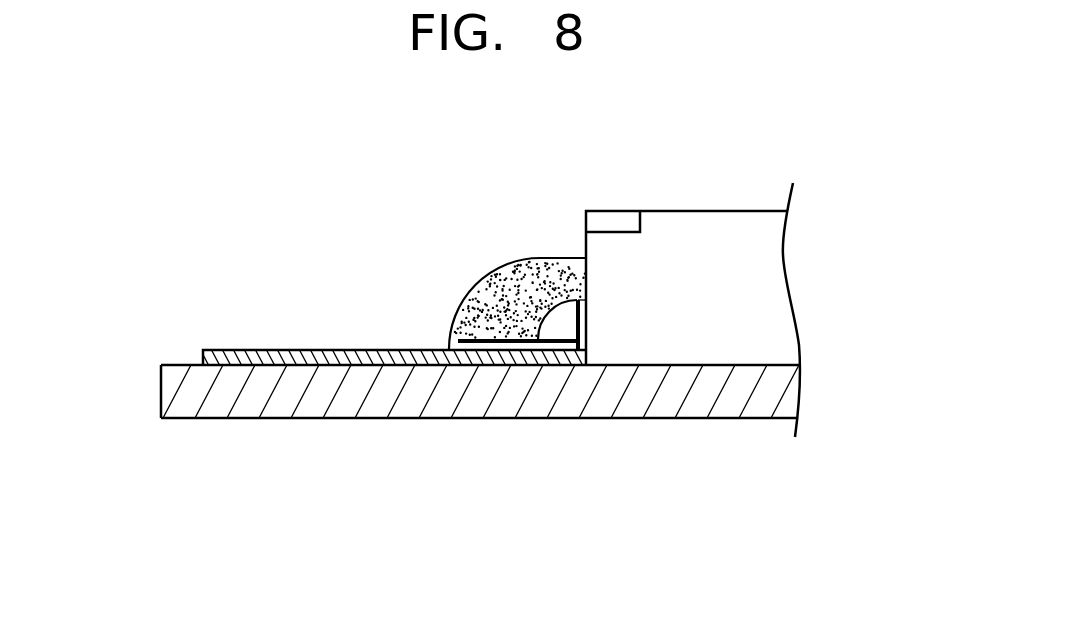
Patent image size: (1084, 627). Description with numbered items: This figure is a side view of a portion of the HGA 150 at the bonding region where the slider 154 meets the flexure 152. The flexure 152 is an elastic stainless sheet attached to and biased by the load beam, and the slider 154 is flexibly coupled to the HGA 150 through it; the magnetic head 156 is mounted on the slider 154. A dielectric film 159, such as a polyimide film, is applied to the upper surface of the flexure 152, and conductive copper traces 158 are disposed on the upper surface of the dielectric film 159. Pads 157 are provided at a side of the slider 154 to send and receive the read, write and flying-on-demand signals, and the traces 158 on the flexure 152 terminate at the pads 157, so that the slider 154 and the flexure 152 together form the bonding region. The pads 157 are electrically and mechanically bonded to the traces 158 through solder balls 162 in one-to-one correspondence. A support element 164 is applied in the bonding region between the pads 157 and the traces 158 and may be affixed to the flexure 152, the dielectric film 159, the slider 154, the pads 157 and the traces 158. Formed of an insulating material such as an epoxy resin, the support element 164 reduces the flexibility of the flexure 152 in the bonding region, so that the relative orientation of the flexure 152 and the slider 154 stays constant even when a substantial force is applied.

The HGA 150 is at (144, 221).
The flexure 152 is at (312, 410).
The slider 154 is at (718, 233).
The magnetic head 156 is at (620, 220).
The pads 157 is at (583, 322).
The traces 158 is at (495, 345).
The dielectric film 159 is at (267, 350).
The solder balls 162 is at (560, 327).
The support element 164 is at (528, 270).